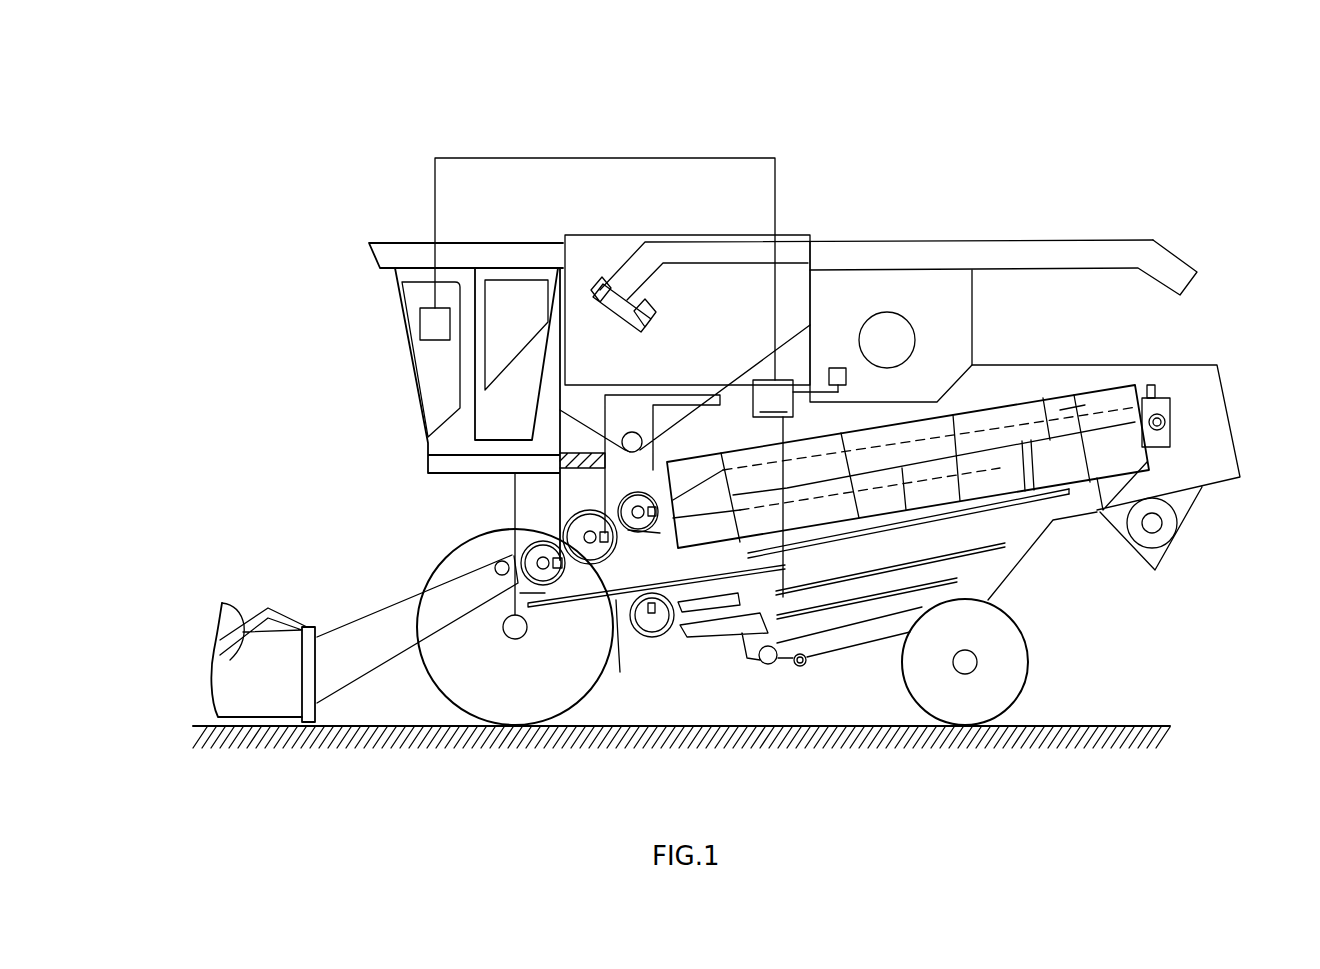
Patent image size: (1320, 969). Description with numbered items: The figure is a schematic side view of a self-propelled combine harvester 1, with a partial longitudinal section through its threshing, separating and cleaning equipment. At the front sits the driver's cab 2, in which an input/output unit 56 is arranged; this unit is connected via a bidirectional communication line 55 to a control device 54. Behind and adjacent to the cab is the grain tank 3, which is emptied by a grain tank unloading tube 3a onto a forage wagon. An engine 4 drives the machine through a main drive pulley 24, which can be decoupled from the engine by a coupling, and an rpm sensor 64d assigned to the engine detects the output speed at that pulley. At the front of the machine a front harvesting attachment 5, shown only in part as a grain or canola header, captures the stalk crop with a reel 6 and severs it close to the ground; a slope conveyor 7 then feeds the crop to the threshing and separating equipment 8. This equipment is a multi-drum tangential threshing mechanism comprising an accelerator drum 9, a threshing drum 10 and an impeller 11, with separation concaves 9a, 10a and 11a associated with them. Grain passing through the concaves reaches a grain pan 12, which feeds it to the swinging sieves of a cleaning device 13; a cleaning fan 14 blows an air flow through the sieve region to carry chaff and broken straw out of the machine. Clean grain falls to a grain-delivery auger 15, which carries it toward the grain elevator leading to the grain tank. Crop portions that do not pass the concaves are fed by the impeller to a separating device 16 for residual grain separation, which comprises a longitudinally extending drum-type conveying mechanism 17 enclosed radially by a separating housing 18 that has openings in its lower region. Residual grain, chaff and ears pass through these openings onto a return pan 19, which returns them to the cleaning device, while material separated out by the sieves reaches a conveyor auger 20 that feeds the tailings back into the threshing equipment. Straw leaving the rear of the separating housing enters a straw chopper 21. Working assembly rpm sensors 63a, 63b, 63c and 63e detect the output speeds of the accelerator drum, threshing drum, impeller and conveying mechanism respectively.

The self-propelled combine harvester 1 is at (1022, 364).
The driver's cab 2 is at (468, 348).
The grain tank 3 is at (600, 257).
The grain tank unloading tube 3a is at (1153, 240).
The engine 4 is at (883, 287).
The front harvesting attachment 5 is at (268, 653).
The reel 6 is at (220, 608).
The slope conveyor 7 is at (358, 637).
The threshing and separating equipment 8 is at (537, 483).
The accelerator drum 9 is at (547, 545).
The separation concave 9a is at (540, 593).
The threshing drum 10 is at (590, 510).
The separation concave 10a is at (587, 570).
The impeller 11 is at (638, 505).
The separation concave 11a is at (660, 532).
The grain pan 12 is at (621, 600).
The cleaning device 13 is at (947, 583).
The cleaning fan 14 is at (658, 623).
The grain-delivery auger 15 is at (770, 665).
The separating device 16 is at (992, 393).
The drum-type conveying mechanism 17 is at (1070, 407).
The separating housing 18 is at (1043, 398).
The return pan 19 is at (1068, 497).
The conveyor auger 20 is at (808, 662).
The straw chopper 21 is at (1182, 517).
The main drive pulley 24 is at (917, 337).
The control device 54 is at (795, 488).
The bidirectional communication line 55 is at (552, 158).
The input/output unit 56 is at (420, 322).
The working assembly rpm sensor 63a is at (553, 563).
The working assembly rpm sensor 63b is at (612, 545).
The working assembly rpm sensor 63c is at (653, 510).
The working assembly rpm sensor 63e is at (1160, 394).
The rpm sensor 64d is at (846, 378).